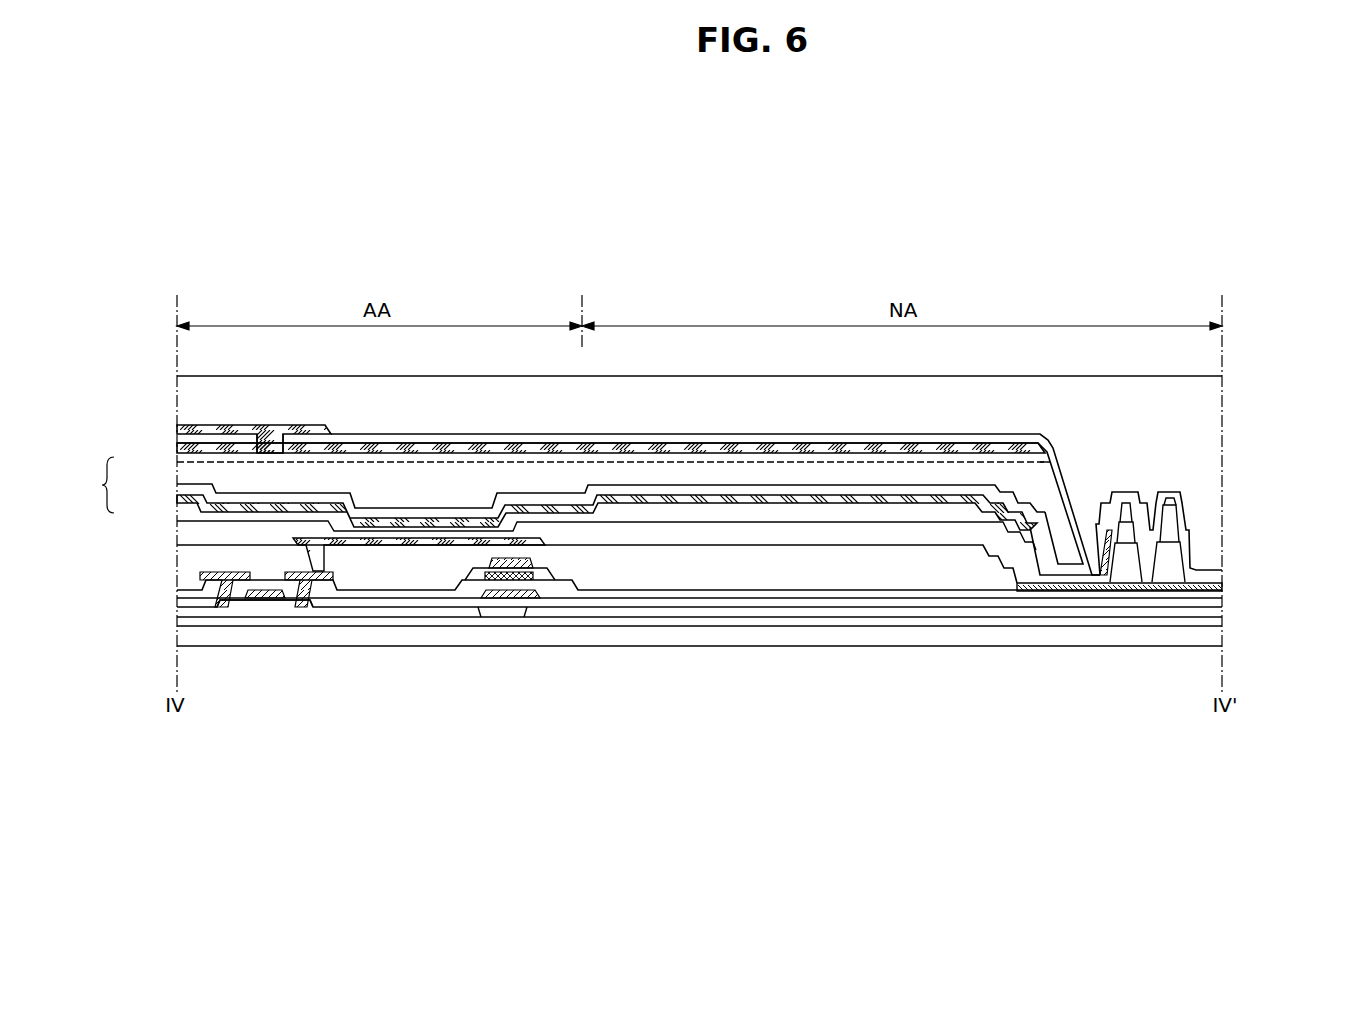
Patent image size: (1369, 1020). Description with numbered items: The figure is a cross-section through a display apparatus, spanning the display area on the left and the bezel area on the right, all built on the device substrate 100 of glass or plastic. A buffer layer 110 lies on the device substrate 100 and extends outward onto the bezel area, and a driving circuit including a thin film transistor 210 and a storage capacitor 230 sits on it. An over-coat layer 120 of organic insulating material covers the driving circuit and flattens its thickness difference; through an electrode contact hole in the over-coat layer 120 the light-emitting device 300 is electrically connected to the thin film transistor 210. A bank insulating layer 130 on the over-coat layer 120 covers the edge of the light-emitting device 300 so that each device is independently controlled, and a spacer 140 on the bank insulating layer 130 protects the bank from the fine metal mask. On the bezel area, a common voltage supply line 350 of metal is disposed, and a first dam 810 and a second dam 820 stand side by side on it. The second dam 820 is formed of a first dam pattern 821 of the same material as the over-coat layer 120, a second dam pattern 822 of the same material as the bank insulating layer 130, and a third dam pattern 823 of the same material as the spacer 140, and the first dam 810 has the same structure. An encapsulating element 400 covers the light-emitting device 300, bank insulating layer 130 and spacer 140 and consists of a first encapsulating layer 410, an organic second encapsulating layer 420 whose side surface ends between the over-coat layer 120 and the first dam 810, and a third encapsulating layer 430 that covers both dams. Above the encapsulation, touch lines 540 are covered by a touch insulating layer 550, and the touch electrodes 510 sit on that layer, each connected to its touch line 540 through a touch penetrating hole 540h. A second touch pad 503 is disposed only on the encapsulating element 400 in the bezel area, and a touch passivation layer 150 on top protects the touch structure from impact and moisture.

The device substrate 100 is at (1210, 640).
The buffer layer 110 is at (1210, 619).
The over-coat layer 120 is at (185, 571).
The bank insulating layer 130 is at (185, 540).
The spacer 140 is at (875, 518).
The touch passivation layer 150 is at (1210, 421).
The thin film transistor 210 is at (258, 609).
The storage capacitor 230 is at (503, 616).
The light-emitting device 300 is at (400, 546).
The common voltage supply line 350 is at (1050, 591).
The encapsulating element 400 is at (90, 485).
The first encapsulating layer 410 is at (185, 496).
The second encapsulating layer 420 is at (185, 480).
The third encapsulating layer 430 is at (185, 462).
The second touch pad 503 is at (964, 463).
The touch electrode 510 is at (178, 430).
The touch line 540 is at (650, 454).
The touch penetrating hole 540h is at (254, 438).
The touch insulating layer 550 is at (698, 441).
The first dam 810 is at (1119, 583).
The second dam 820 is at (1243, 594).
The first dam pattern 821 is at (1172, 559).
The second dam pattern 822 is at (1167, 530).
The third dam pattern 823 is at (1170, 505).